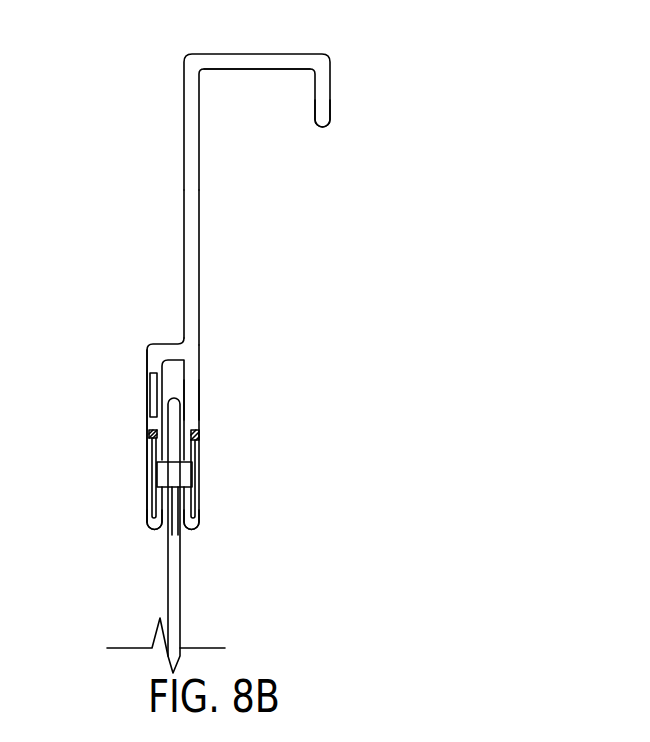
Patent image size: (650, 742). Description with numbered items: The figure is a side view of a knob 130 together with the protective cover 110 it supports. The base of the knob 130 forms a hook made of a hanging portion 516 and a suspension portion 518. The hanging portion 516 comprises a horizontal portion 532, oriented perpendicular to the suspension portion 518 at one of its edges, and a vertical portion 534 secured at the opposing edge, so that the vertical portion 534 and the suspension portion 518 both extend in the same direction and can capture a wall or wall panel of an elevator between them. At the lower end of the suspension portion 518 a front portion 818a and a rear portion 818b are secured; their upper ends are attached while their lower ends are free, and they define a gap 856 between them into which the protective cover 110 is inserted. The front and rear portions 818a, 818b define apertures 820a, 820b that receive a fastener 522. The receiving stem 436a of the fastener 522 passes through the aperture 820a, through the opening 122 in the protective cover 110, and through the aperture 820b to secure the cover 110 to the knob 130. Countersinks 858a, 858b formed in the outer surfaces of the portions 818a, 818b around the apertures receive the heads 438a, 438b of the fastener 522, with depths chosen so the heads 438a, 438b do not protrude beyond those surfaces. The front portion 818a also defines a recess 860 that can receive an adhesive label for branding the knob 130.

The knob 130 is at (278, 278).
The hanging portion 516 is at (362, 83).
The suspension portion 518 is at (188, 204).
The horizontal portion 532 is at (233, 64).
The vertical portion 534 is at (332, 112).
The fastener 522 is at (106, 481).
The gap 856 is at (186, 357).
The recess 860 is at (148, 385).
The front portion 818a is at (150, 417).
The rear portion 818b is at (193, 402).
The countersink 858a is at (150, 433).
The countersink 858b is at (197, 432).
The head 438a is at (148, 460).
The head 438b is at (200, 477).
The receiving stem 436a is at (173, 472).
The aperture 820a is at (156, 532).
The aperture 820b is at (193, 532).
The opening 122 is at (168, 530).
The protective cover 110 is at (168, 598).